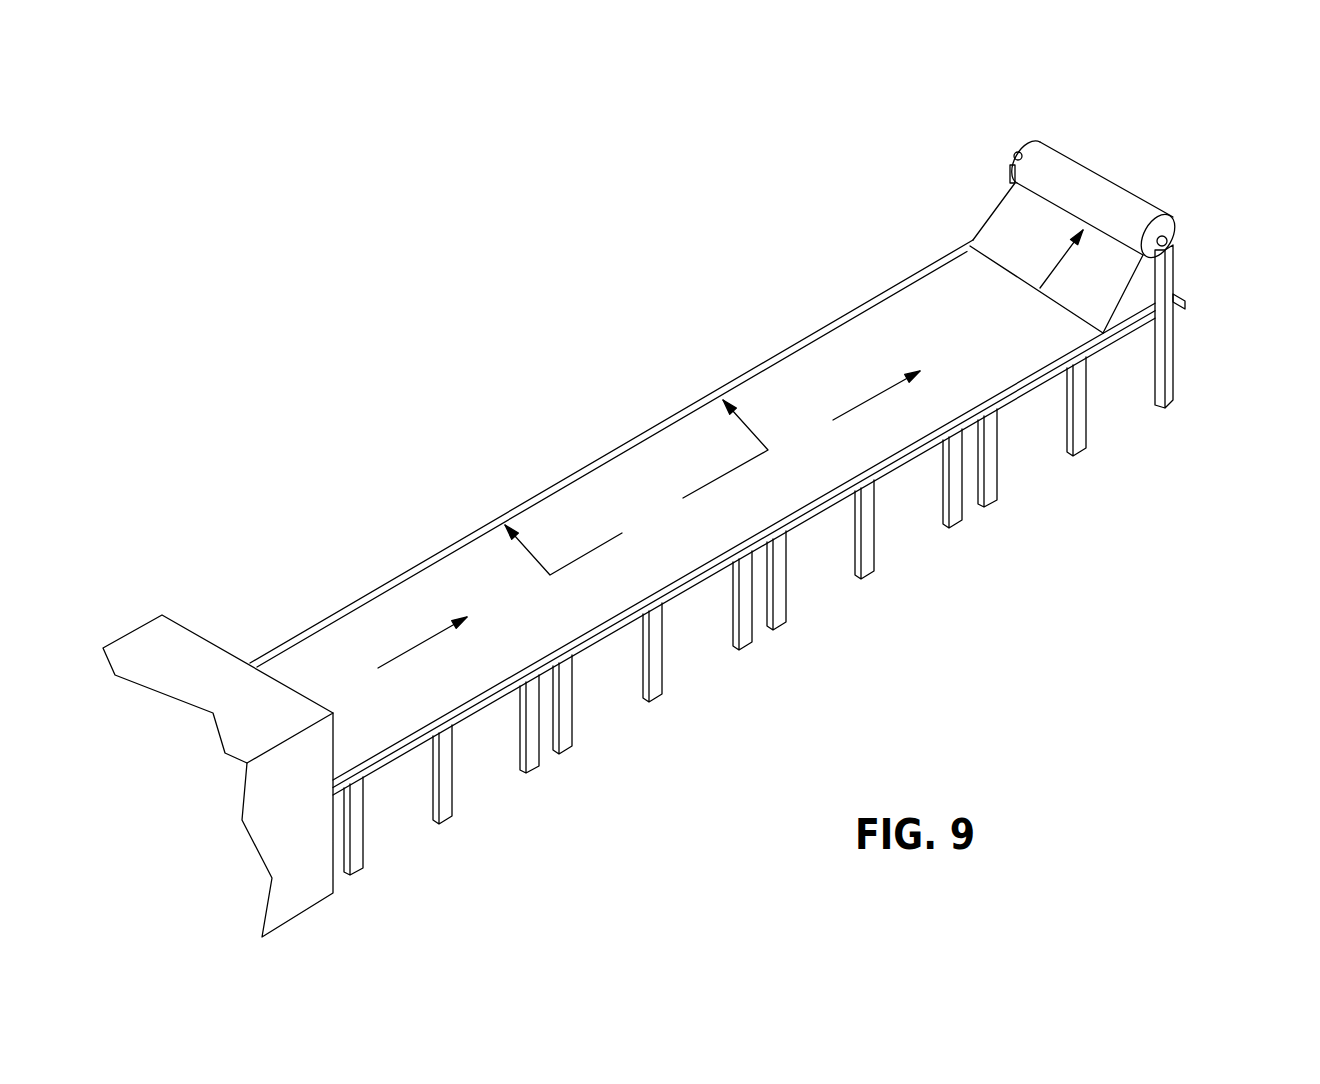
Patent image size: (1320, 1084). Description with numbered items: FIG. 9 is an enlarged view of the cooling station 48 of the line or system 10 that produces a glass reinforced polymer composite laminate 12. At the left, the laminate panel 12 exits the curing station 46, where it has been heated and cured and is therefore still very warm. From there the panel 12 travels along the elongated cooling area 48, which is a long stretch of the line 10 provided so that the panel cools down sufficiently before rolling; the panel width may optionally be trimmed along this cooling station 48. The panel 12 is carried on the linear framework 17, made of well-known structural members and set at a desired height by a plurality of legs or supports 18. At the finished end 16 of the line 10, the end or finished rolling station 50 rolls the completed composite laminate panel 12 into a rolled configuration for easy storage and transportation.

The line or system 10 is at (517, 318).
The glass reinforced polymer composite laminate 12 is at (758, 397).
The finished end 16 is at (1188, 285).
The linear framework 17 is at (687, 592).
The legs or supports 18 is at (564, 750).
The curing station 46 is at (162, 637).
The cooling station 48 is at (458, 577).
The end/finished rolling station 50 is at (1058, 163).